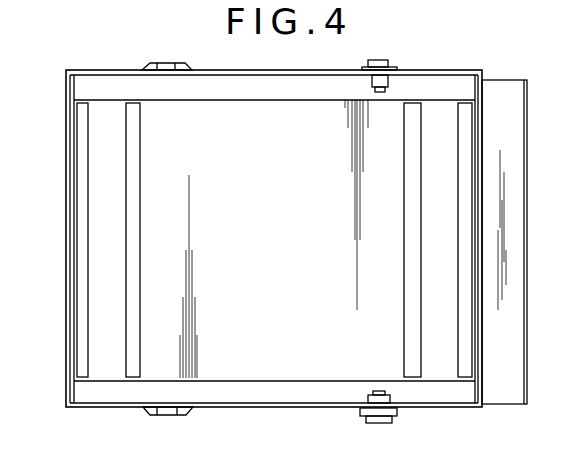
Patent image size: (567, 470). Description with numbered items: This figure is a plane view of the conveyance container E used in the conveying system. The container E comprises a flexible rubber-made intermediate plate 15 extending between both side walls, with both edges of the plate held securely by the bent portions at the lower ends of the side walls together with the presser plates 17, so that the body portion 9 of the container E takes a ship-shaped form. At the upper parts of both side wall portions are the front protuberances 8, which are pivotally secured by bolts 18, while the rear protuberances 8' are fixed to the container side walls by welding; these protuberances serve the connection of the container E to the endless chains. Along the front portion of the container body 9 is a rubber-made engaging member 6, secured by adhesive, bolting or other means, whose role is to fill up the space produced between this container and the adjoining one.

The conveyance container E is at (65, 271).
The intermediate plate 15 is at (100, 205).
The presser plate 17 is at (258, 116).
The body portion 9 is at (153, 365).
The engaging member 6 is at (543, 238).
The rear protuberance 8' is at (177, 234).
The bolt 18 is at (376, 59).
The front protuberance 8 is at (401, 243).